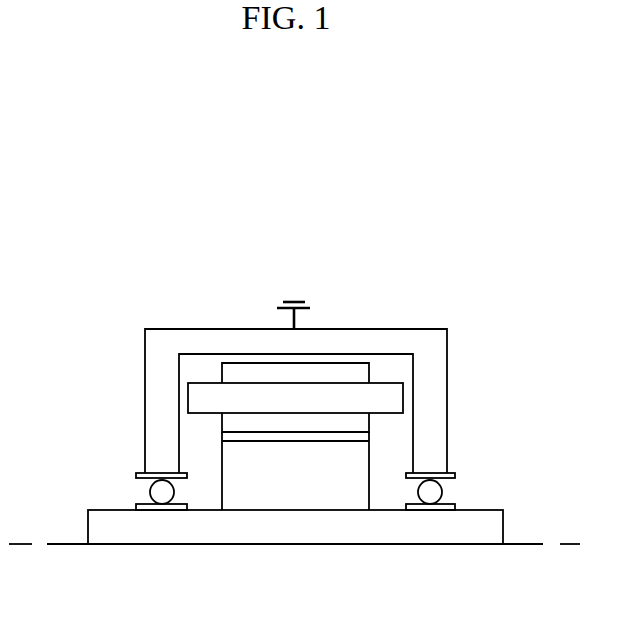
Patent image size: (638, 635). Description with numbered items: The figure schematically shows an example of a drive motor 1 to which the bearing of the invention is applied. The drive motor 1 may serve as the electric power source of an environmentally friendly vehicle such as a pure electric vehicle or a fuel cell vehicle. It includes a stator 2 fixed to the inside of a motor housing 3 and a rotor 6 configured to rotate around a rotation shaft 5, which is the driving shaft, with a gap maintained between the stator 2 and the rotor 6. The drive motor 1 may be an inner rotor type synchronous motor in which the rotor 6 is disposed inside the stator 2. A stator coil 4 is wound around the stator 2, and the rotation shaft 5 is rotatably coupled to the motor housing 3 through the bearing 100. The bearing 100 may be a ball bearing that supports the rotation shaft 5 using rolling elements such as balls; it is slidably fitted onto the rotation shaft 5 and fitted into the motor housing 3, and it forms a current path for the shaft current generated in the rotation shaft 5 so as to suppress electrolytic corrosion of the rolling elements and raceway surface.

The drive motor 1 is at (143, 242).
The stator 2 is at (236, 372).
The motor housing 3 is at (447, 373).
The stator coil 4 is at (345, 400).
The rotation shaft 5 is at (337, 530).
The rotor 6 is at (262, 500).
The bearing 100 is at (478, 490).